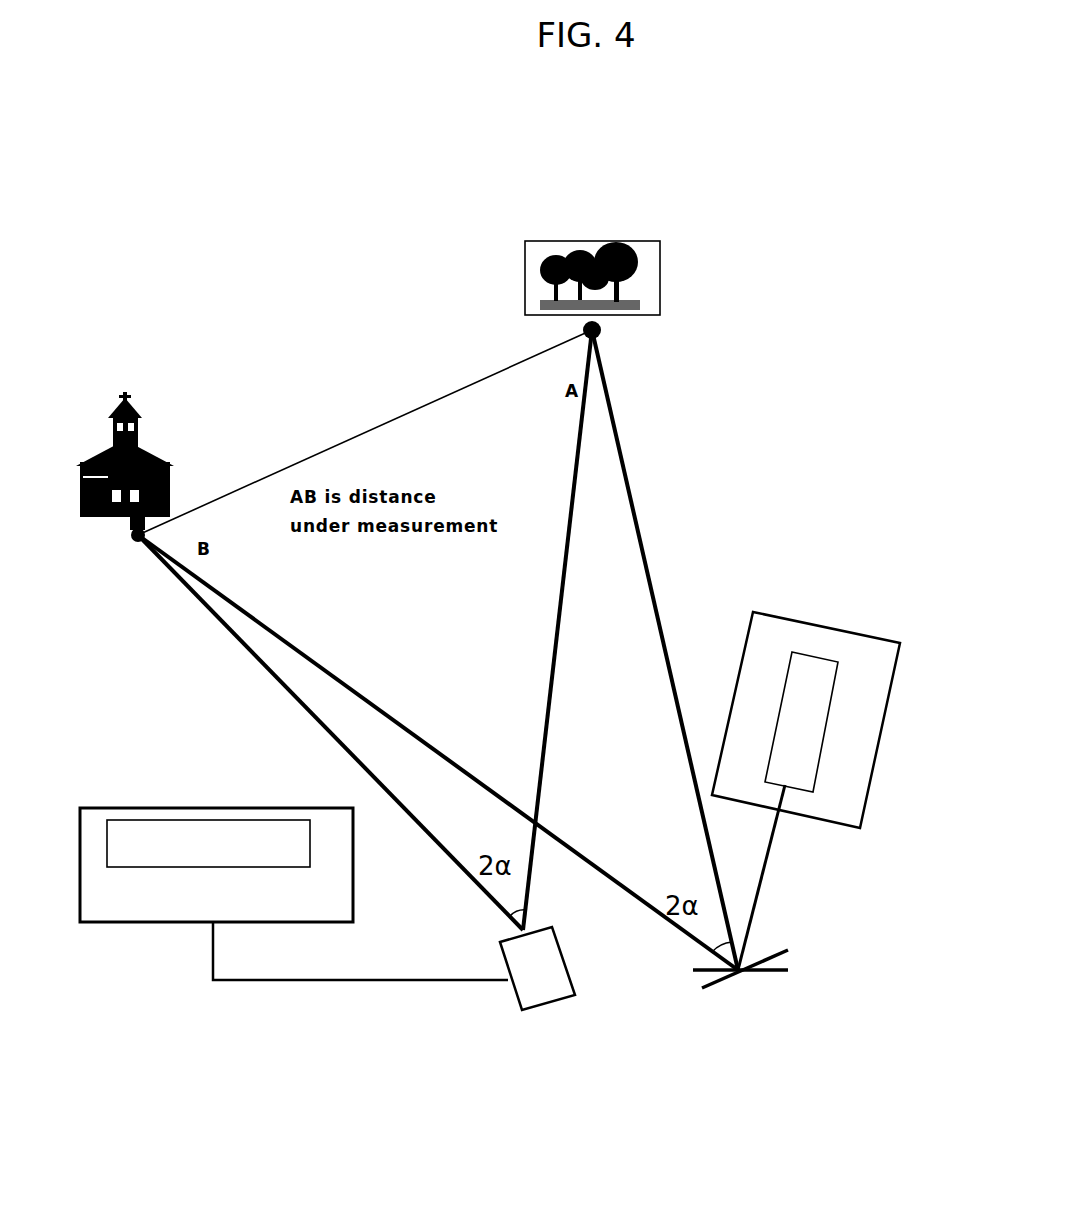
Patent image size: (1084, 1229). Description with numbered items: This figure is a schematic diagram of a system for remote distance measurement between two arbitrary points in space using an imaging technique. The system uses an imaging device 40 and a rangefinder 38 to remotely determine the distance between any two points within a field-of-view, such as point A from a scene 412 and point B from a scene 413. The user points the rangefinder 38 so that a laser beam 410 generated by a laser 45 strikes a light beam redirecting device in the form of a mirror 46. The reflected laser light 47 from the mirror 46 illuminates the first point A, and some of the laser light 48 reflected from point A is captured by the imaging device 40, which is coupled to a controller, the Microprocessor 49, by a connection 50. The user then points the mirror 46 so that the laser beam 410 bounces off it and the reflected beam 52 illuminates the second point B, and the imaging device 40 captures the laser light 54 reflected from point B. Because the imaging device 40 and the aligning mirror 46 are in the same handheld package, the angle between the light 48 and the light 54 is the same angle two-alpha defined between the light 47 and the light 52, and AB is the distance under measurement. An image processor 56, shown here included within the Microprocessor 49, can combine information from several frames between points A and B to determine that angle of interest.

The rangefinder 38 is at (868, 680).
The imaging device 40 is at (542, 983).
The laser 45 is at (797, 670).
The mirror 46 is at (762, 977).
The reflected laser light 47 is at (683, 737).
The laser light 48 is at (558, 648).
The Microprocessor 49 is at (332, 828).
The connection 50 is at (297, 980).
The reflected beam 52 is at (462, 770).
The laser light 54 is at (255, 662).
The image processor 56 is at (130, 830).
The laser beam 410 is at (755, 918).
The scene 412 is at (638, 317).
The scene 413 is at (155, 455).